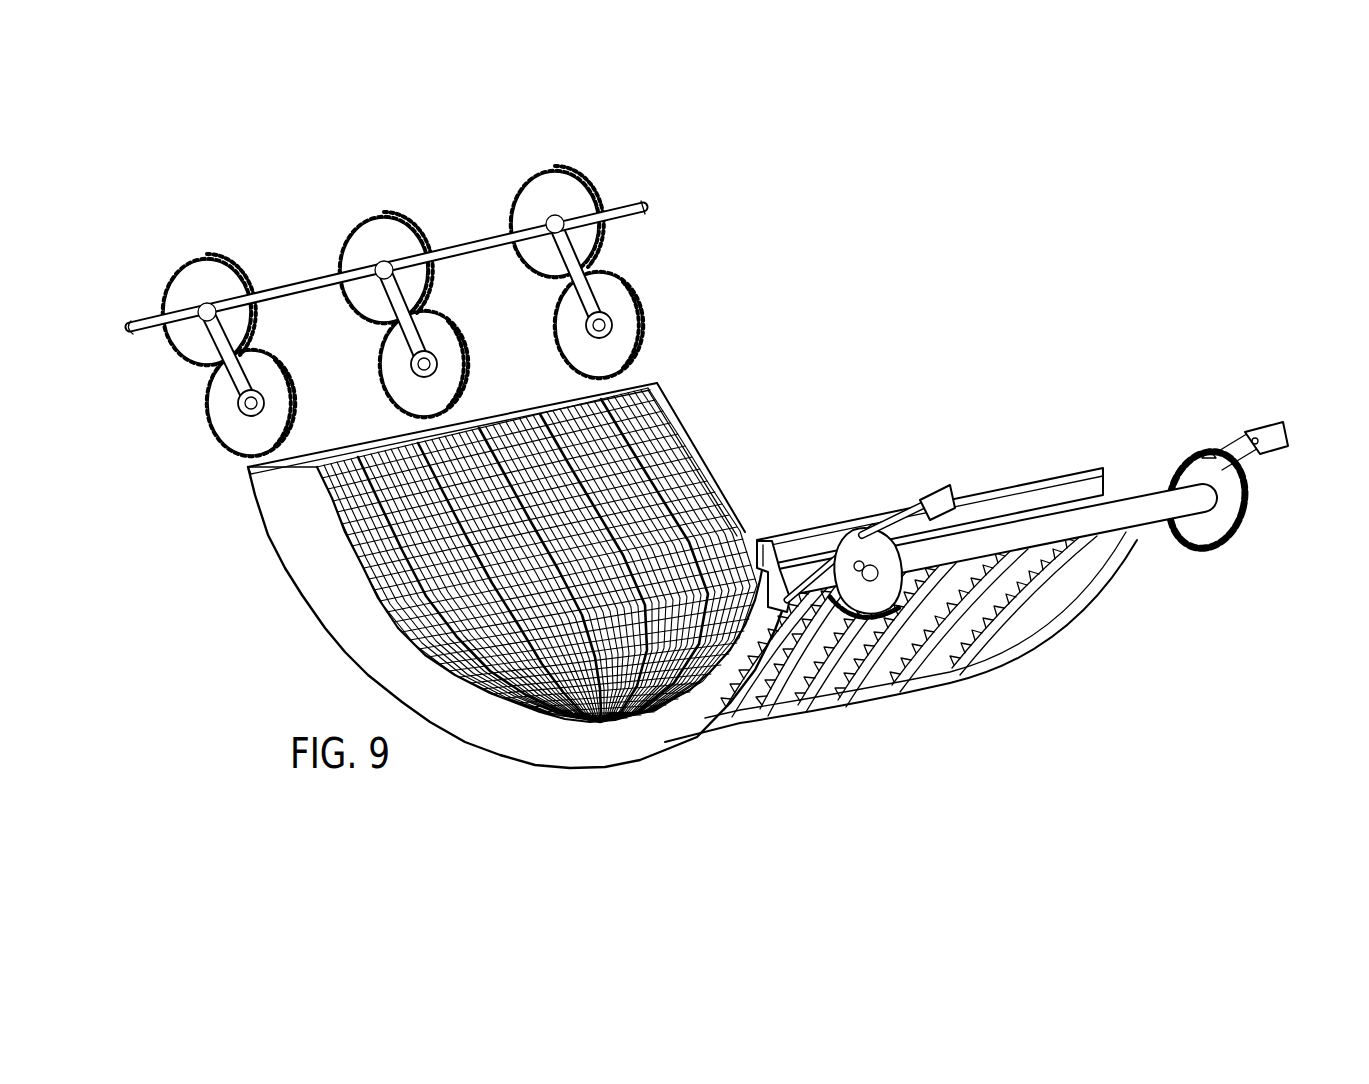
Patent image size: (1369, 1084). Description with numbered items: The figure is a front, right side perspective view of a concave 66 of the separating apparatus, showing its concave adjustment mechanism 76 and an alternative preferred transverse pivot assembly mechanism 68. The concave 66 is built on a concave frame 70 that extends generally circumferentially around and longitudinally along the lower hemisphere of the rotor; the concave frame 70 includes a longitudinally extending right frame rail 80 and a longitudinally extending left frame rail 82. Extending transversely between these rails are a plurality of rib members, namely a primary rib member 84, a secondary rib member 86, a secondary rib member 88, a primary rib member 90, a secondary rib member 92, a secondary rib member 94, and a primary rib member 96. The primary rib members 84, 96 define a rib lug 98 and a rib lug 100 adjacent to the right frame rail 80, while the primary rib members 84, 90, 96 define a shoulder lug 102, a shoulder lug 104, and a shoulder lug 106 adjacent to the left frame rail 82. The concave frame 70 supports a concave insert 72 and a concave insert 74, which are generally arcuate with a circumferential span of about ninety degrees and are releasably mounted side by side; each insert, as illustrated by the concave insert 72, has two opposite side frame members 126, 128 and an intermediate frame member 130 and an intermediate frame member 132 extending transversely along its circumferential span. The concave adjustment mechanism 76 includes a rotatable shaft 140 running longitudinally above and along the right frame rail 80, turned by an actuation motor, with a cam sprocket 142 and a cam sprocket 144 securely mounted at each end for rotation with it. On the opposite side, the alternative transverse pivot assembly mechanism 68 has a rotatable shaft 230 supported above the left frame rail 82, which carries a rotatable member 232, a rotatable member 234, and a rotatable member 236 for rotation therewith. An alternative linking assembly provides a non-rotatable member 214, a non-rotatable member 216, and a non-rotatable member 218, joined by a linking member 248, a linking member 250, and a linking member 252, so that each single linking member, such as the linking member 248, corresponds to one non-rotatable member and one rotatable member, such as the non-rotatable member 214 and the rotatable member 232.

The concave 66 is at (570, 880).
The alternative preferred transverse pivot assembly mechanism 68 is at (683, 148).
The concave frame 70 is at (483, 752).
The concave insert 72 is at (440, 617).
The concave insert 74 is at (697, 497).
The concave adjustment mechanism 76 is at (1307, 370).
The right frame rail 80 is at (993, 520).
The left frame rail 82 is at (640, 378).
The primary rib member 84 is at (683, 738).
The secondary rib member 86 is at (742, 722).
The secondary rib member 88 is at (803, 700).
The primary rib member 90 is at (858, 690).
The secondary rib member 92 is at (920, 668).
The secondary rib member 94 is at (972, 655).
The primary rib member 96 is at (1040, 650).
The rib lug 98 is at (793, 583).
The rib lug 100 is at (1137, 513).
The shoulder lug 102 is at (246, 468).
The shoulder lug 104 is at (453, 417).
The shoulder lug 106 is at (637, 376).
The side frame member 126 is at (360, 577).
The side frame member 128 is at (528, 526).
The intermediate frame member 130 is at (385, 505).
The intermediate frame member 132 is at (462, 520).
The rotatable shaft 140 is at (1070, 530).
The cam sprocket 142 is at (870, 527).
The cam sprocket 144 is at (1207, 477).
The non-rotatable member 214 is at (233, 427).
The non-rotatable member 216 is at (405, 384).
The non-rotatable member 218 is at (620, 300).
The rotatable shaft 230 is at (465, 252).
The rotatable member 232 is at (209, 268).
The rotatable member 234 is at (388, 222).
The rotatable member 236 is at (566, 176).
The linking member 248 is at (185, 383).
The linking member 250 is at (385, 322).
The linking member 252 is at (556, 275).